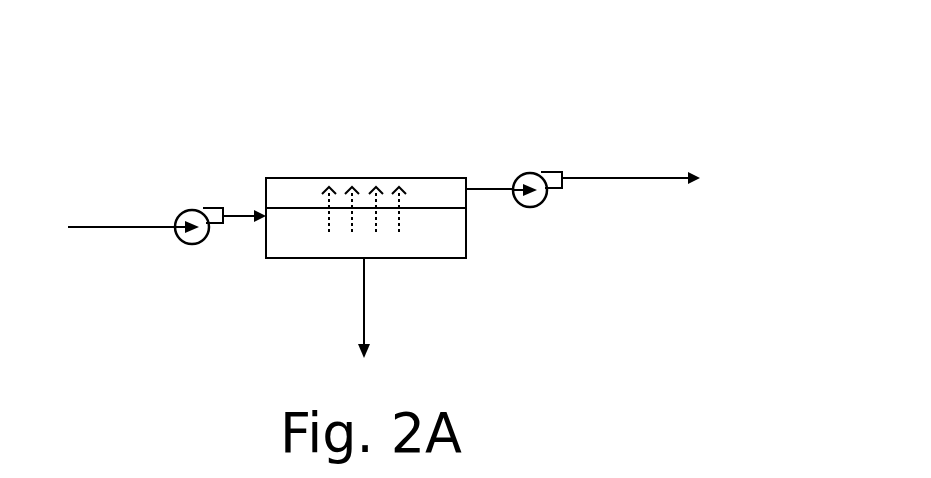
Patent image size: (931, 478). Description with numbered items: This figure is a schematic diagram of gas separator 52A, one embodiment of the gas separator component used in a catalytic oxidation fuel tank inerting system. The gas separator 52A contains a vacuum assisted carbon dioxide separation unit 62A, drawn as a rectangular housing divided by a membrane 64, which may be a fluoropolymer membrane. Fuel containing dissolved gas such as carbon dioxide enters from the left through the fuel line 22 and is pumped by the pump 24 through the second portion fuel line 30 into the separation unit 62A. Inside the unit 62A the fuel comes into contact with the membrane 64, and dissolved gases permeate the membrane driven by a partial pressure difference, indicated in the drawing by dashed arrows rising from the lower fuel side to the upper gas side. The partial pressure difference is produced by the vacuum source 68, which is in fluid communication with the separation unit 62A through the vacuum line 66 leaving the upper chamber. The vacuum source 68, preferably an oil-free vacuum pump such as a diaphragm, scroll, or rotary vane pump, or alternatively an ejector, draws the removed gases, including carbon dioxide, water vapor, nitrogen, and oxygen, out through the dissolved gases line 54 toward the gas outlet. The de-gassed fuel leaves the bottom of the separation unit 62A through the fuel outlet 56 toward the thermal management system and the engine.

The fuel line 22 is at (77, 227).
The pump 24 is at (193, 210).
The second portion fuel line 30 is at (240, 213).
The gas separator 52A is at (393, 83).
The dissolved gases line 54 is at (655, 178).
The fuel outlet 56 is at (360, 295).
The vacuum assisted CO2 separation unit 62A is at (300, 176).
The membrane 64 is at (452, 210).
The vacuum line 66 is at (493, 188).
The vacuum source 68 is at (533, 172).